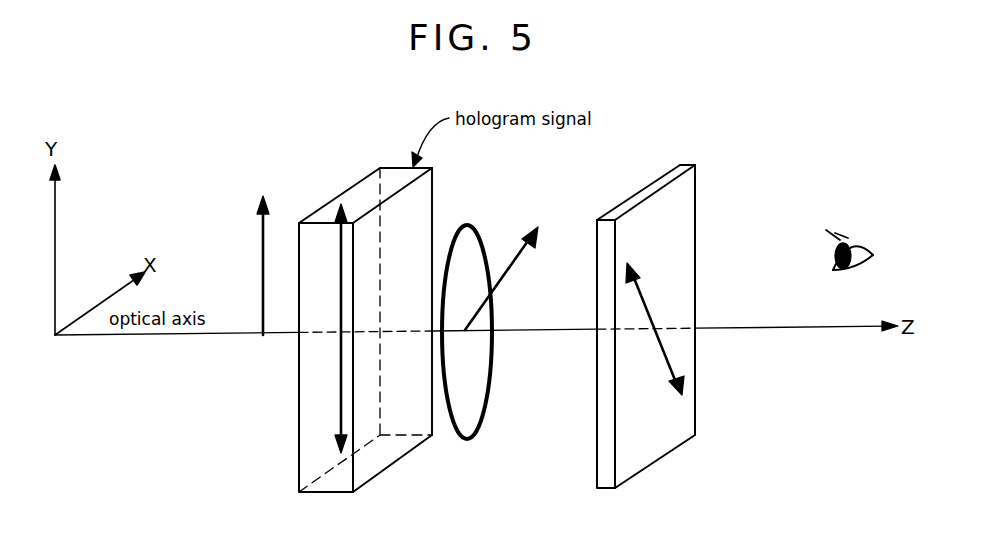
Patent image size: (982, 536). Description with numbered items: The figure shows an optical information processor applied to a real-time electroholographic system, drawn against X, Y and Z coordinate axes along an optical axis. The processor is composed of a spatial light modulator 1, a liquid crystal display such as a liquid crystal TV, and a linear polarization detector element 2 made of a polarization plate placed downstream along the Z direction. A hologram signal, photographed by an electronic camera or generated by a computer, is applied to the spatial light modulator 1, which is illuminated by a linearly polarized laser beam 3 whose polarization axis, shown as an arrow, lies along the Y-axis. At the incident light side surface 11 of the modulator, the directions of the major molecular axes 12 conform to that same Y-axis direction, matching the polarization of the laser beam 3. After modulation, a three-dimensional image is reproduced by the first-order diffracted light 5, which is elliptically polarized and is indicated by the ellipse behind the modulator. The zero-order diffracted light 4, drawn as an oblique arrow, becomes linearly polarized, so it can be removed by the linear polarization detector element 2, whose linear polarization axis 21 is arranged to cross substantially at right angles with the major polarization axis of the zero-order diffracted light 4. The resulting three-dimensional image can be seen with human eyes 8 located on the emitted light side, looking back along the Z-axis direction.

The spatial light modulator 1 is at (420, 206).
The linear polarization detector element 2 is at (680, 211).
The linearly polarized laser beam 3 is at (276, 215).
The zero-order diffracted light 4 is at (522, 276).
The first-order diffracted light 5 is at (503, 400).
The human eyes 8 is at (860, 248).
The incident light side surface 11 is at (312, 358).
The major molecular axes 12 is at (341, 405).
The linear polarization axis 21 is at (662, 355).